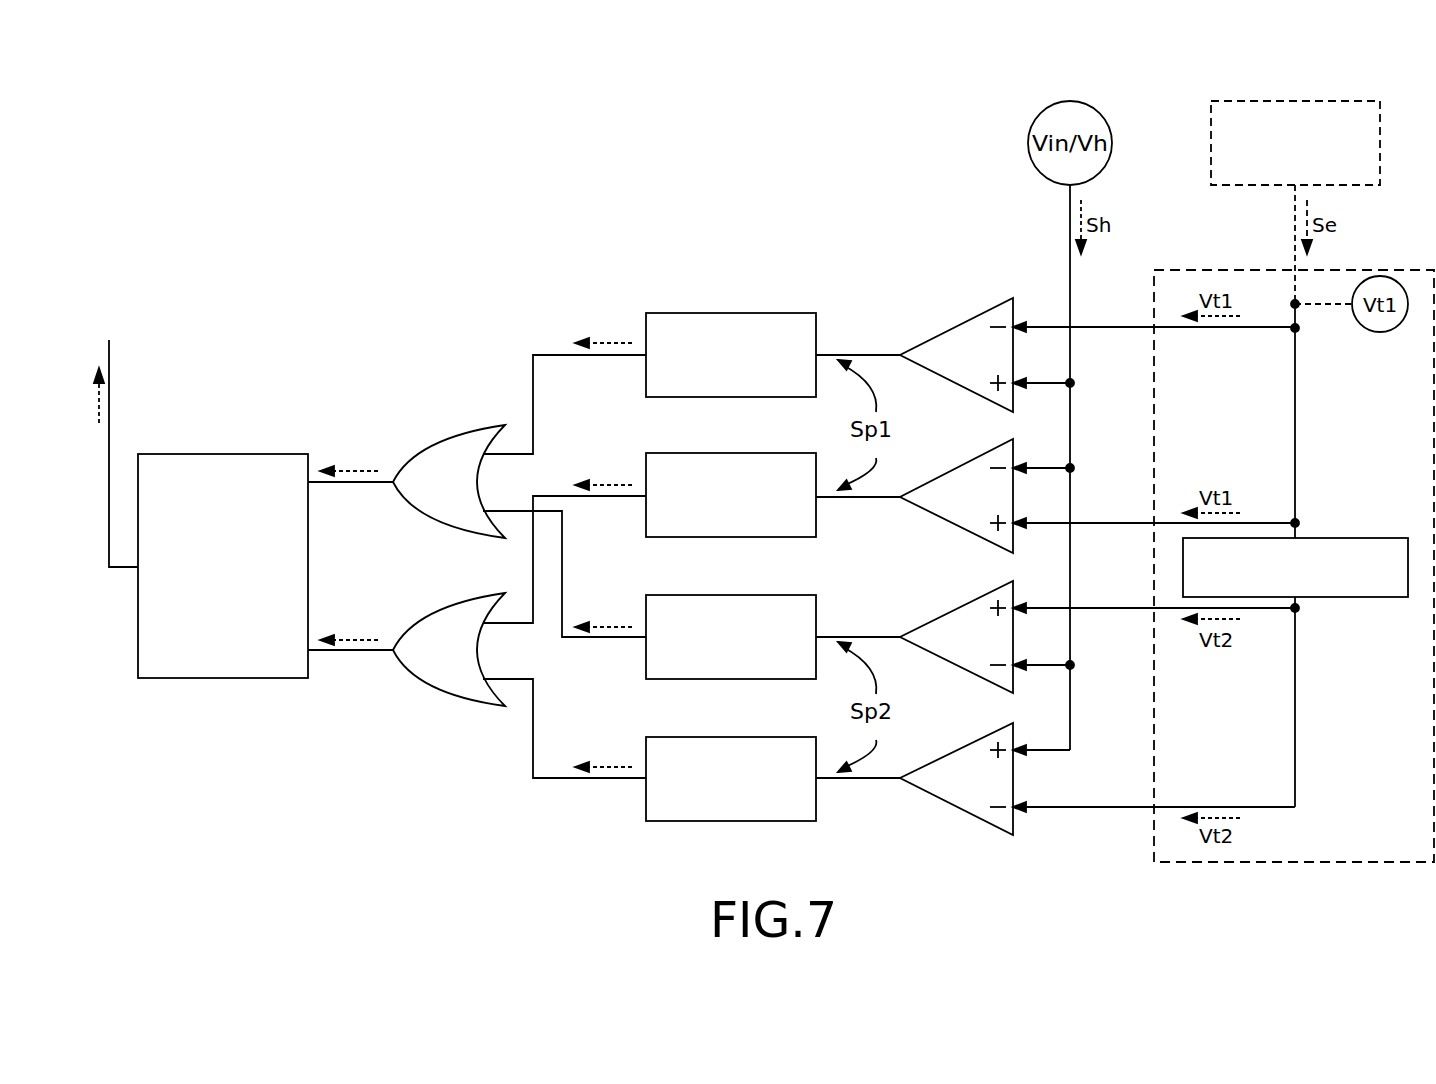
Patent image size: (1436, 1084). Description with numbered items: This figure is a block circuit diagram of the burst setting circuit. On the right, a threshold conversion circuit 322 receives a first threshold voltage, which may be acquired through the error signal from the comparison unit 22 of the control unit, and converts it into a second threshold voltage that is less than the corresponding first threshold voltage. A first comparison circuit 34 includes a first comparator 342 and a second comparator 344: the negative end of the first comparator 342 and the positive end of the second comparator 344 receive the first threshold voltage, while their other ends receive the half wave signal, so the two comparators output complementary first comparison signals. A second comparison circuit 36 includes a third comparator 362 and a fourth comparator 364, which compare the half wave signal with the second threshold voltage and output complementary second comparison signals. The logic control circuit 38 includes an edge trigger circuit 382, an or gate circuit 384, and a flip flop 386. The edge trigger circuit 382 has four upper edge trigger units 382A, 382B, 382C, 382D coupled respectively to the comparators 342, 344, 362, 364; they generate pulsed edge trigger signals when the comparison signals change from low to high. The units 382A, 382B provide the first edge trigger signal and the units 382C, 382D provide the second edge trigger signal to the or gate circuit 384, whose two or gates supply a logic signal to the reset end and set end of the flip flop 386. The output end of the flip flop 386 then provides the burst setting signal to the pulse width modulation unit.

The comparison unit 22 is at (1296, 108).
The threshold conversion circuit 322 is at (1305, 548).
The first comparison circuit 34 is at (914, 401).
The first comparator 342 is at (956, 340).
The second comparator 344 is at (956, 480).
The second comparison circuit 36 is at (914, 713).
The third comparator 362 is at (956, 621).
The fourth comparator 364 is at (956, 761).
The logic control circuit 38 is at (440, 526).
The edge trigger circuit 382 is at (649, 514).
The upper edge trigger unit 382A is at (730, 322).
The upper edge trigger unit 382B is at (730, 462).
The upper edge trigger unit 382C is at (730, 604).
The upper edge trigger unit 382D is at (730, 746).
The or gate circuit 384 is at (466, 400).
The flip flop 386 is at (223, 460).